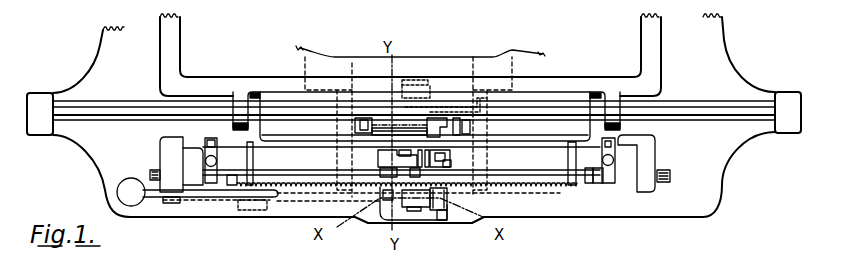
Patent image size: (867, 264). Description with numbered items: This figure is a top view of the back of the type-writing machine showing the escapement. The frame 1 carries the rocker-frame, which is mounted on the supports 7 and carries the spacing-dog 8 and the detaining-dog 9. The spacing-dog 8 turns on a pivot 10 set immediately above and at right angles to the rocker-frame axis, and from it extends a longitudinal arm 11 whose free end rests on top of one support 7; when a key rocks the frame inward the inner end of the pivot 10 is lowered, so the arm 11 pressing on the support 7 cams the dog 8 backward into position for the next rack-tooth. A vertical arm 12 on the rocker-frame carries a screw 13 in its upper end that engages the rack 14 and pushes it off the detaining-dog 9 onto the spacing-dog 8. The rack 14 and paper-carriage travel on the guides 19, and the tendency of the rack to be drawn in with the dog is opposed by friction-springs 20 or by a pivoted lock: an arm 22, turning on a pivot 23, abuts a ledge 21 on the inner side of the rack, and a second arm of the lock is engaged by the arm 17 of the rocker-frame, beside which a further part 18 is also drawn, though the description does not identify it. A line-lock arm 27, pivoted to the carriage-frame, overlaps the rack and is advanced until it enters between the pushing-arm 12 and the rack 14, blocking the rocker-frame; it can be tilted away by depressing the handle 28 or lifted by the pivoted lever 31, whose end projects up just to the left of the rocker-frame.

The frame 1 is at (720, 178).
The supports 7 is at (483, 155).
The spacing-dog 8 is at (407, 158).
The detaining-dog 9 is at (403, 195).
The pivot 10 is at (423, 79).
The longitudinal arm 11 is at (480, 109).
The vertical arm 12 is at (447, 200).
The screw 13 is at (428, 217).
The rack 14 is at (522, 185).
The arm of the rocker-frame 17 is at (445, 157).
The spring 18 is at (452, 163).
The guides 19 is at (132, 103).
The friction-springs 20 is at (214, 168).
The ledge 21 is at (307, 168).
The arm 22 is at (405, 155).
The pivot 23 is at (473, 128).
The arm 27 is at (233, 193).
The handle 28 is at (132, 174).
The lever 31 is at (310, 197).